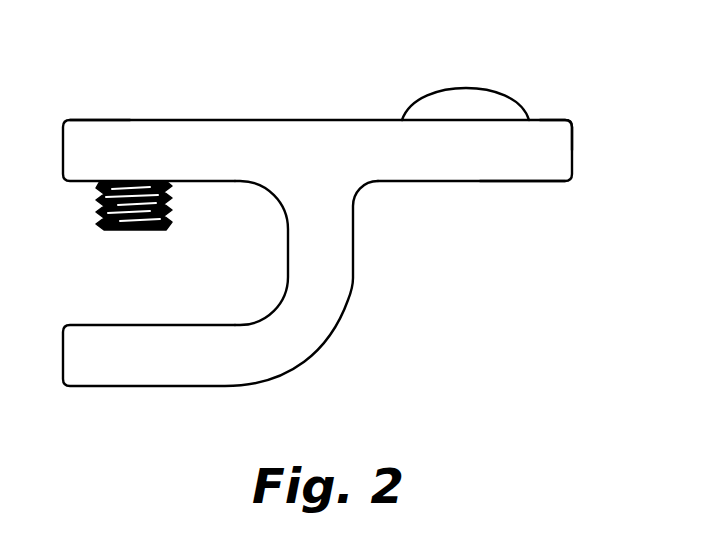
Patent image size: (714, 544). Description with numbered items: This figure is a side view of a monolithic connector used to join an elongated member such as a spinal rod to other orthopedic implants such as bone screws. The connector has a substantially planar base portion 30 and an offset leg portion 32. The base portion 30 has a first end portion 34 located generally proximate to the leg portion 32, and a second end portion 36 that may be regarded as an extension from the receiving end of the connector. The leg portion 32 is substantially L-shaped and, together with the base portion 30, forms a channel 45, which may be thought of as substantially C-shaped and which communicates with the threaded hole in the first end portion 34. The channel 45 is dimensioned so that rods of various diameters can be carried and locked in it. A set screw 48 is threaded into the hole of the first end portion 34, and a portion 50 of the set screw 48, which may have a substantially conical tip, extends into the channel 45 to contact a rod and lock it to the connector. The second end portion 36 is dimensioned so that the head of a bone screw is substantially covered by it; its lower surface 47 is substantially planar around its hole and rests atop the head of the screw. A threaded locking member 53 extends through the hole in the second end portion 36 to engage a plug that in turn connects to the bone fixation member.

The base portion 30 is at (300, 120).
The first end portion 34 is at (88, 120).
The second end portion 36 is at (543, 119).
The threaded locking member 53 is at (488, 88).
The lower surface 47 is at (527, 182).
The channel 45 is at (240, 288).
The leg portion 32 is at (287, 341).
The set screw 48 is at (97, 210).
The portion of set screw 50 is at (172, 208).